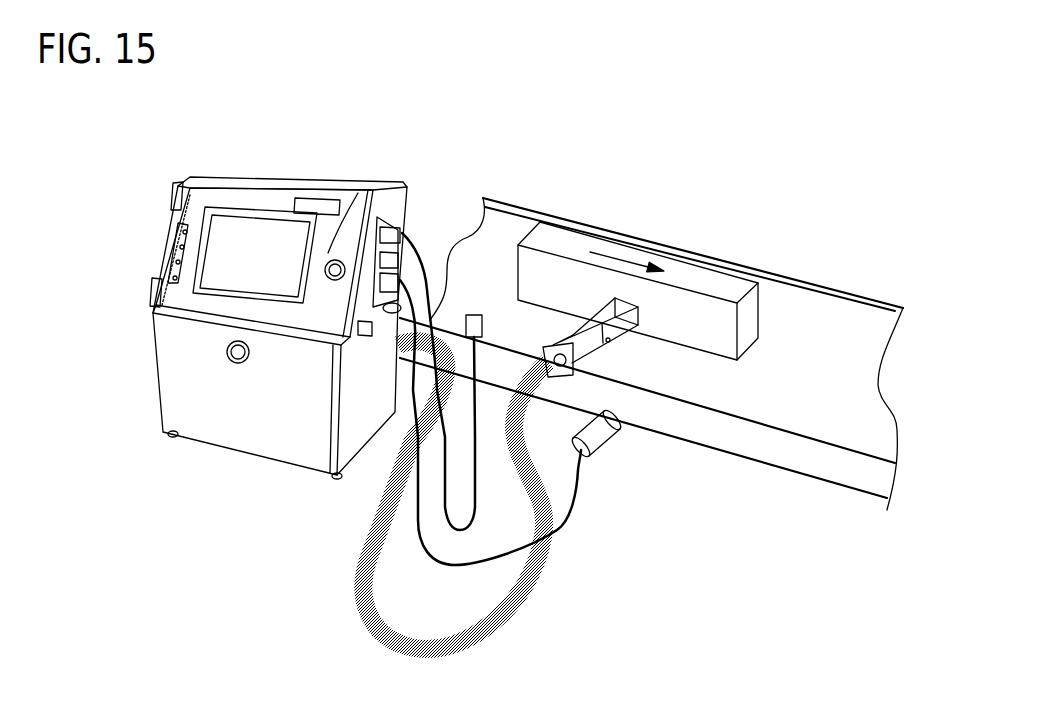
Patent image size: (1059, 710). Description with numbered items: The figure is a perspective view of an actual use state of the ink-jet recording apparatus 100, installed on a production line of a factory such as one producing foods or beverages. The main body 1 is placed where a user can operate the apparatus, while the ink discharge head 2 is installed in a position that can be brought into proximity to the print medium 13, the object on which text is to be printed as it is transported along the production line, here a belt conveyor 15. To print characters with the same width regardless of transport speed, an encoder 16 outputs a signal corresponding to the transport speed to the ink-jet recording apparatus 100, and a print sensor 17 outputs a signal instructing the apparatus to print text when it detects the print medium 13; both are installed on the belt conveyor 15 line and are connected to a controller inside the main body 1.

The ink-jet recording apparatus 100 is at (150, 207).
The main body 1 is at (165, 262).
The ink discharge head 2 is at (625, 332).
The print medium 13 is at (560, 240).
The belt conveyor 15 is at (845, 345).
The encoder 16 is at (608, 436).
The print sensor 17 is at (472, 315).